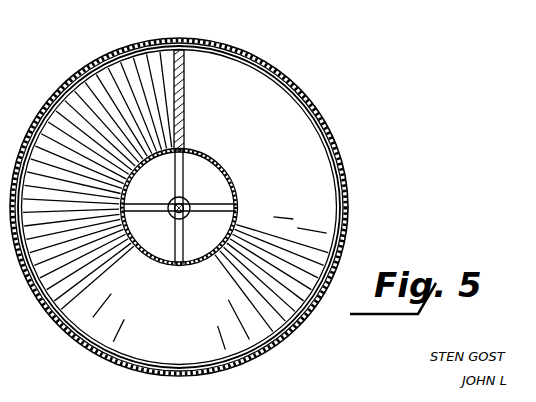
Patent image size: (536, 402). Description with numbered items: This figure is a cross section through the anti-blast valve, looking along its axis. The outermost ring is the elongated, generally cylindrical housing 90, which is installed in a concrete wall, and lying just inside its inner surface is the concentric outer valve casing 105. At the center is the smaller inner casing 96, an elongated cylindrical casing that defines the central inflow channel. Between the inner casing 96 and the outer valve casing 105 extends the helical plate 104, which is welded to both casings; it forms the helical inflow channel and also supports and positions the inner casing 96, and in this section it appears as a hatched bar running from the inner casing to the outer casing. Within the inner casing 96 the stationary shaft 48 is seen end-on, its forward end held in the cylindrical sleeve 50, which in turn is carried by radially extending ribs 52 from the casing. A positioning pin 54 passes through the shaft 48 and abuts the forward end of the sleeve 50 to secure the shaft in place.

The housing 90 is at (47, 101).
The outer valve casing 105 is at (128, 60).
The helical plate 104 is at (185, 99).
The inner casing 96 is at (144, 258).
The shaft 48 is at (171, 218).
The radially extending ribs 52 is at (211, 203).
The cylindrical sleeve 50 is at (189, 215).
The positioning pin 54 is at (182, 222).